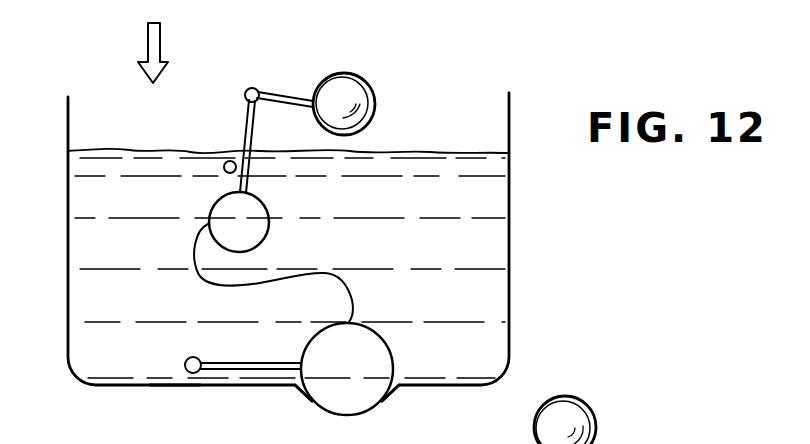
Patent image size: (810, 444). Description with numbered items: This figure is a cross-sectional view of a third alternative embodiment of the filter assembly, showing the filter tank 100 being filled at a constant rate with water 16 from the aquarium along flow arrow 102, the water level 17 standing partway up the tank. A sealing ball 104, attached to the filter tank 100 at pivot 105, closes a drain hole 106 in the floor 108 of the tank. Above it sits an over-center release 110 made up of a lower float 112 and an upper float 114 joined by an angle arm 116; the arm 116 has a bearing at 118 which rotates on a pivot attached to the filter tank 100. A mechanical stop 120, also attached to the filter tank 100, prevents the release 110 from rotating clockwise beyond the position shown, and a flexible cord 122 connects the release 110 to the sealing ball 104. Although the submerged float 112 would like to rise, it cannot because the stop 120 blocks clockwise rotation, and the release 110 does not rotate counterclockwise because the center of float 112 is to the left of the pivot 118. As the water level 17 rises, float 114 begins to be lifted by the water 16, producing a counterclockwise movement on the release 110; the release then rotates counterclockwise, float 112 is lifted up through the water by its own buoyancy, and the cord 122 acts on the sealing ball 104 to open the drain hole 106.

The filter tank 100 is at (68, 225).
The water 16 is at (134, 306).
The water level 17 is at (145, 150).
The flow arrow 102 is at (160, 37).
The sealing ball 104 is at (388, 345).
The pivot 105 is at (198, 374).
The drain hole 106 is at (384, 401).
The floor 108 is at (166, 386).
The over-center release 110 is at (288, 97).
The float 112 is at (270, 226).
The float 114 is at (376, 103).
The angle arm 116 is at (246, 126).
The bearing 118 is at (245, 92).
The mechanical stop 120 is at (224, 170).
The flexible cord 122 is at (340, 272).